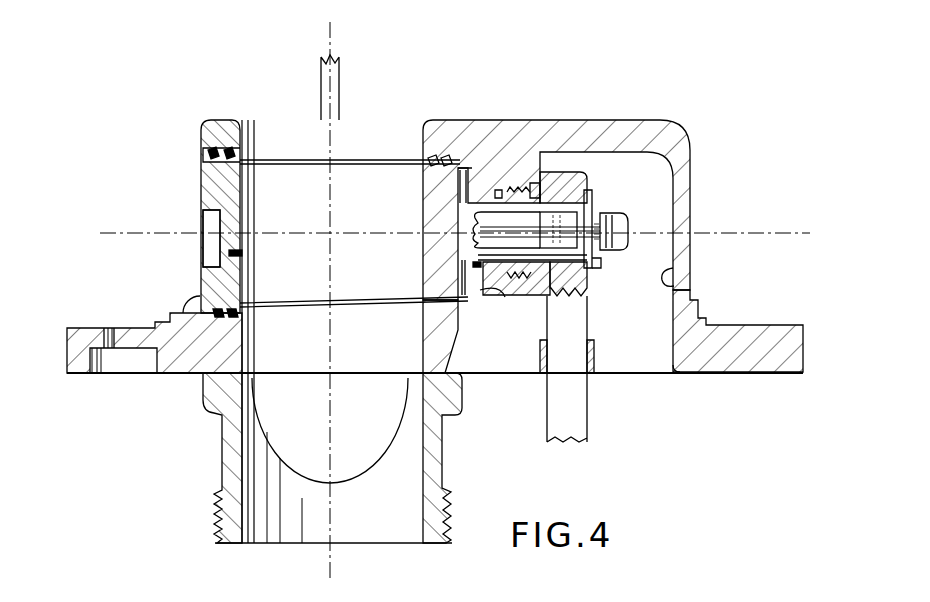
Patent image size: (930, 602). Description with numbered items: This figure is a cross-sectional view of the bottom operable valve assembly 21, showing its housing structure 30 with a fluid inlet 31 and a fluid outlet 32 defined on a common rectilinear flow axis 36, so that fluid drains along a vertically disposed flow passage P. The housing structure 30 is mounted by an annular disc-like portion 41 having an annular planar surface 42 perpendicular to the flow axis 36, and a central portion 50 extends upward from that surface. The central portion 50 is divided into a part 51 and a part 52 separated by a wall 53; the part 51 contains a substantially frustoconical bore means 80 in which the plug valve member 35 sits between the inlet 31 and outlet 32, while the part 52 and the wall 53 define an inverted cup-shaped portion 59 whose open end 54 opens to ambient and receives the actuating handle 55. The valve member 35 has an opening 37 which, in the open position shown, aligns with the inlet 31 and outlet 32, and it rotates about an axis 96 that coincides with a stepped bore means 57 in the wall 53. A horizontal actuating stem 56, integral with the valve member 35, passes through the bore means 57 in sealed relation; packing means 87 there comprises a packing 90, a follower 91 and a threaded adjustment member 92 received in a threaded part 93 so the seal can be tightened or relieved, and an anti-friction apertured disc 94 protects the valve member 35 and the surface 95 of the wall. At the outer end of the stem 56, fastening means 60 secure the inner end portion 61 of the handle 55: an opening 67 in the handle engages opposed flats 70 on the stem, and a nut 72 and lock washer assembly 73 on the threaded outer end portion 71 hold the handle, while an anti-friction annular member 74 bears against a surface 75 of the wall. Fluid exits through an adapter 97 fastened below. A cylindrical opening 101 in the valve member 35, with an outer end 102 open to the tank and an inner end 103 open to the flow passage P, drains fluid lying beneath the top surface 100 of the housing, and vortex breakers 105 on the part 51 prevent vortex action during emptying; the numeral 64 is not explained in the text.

The valve assembly 21 is at (752, 150).
The housing structure 30 is at (672, 116).
The fluid inlet 31 is at (250, 122).
The fluid outlet 32 is at (410, 372).
The valve member 35 is at (205, 210).
The flow axis 36 is at (329, 184).
The opening 37 is at (416, 276).
The annular disc-like portion 41 is at (803, 346).
The annular planar surface 42 is at (773, 325).
The central portion 50 is at (691, 223).
The part 51 is at (234, 126).
The part 52 is at (612, 120).
The wall 53 is at (492, 288).
The open end 54 is at (664, 378).
The actuating handle 55 is at (590, 402).
The actuating stem 56 is at (524, 190).
The stepped bore means 57 is at (477, 216).
The inverted cup-shaped portion 59 is at (690, 250).
The means for detachably fastening 60 is at (622, 190).
The inner end portion 61 is at (589, 319).
The bottom surface 64 is at (735, 374).
The opening 67 is at (590, 197).
The opposed flats 70 is at (570, 228).
The threaded outer end portion 71 is at (630, 226).
The nut 72 is at (595, 256).
The lock washer assembly 73 is at (609, 275).
The anti-friction annular member 74 is at (540, 166).
The surface 75 is at (516, 301).
The frustoconical bore means 80 is at (212, 156).
The packing means 87 is at (474, 290).
The packing sleeve 90 is at (475, 258).
The follower 91 is at (489, 192).
The threaded adjustment member 92 is at (512, 188).
The threaded part 93 is at (533, 300).
The anti-friction apertured disc 94 is at (457, 186).
The surface 95 is at (460, 188).
The axis 96 is at (177, 236).
The adapter 97 is at (218, 443).
The top surface 100 is at (217, 122).
The cylindrical opening 101 is at (240, 256).
The outer end 102 is at (213, 300).
The inner end 103 is at (235, 306).
The vortex breakers 105 is at (338, 65).
The flow passage P is at (296, 346).